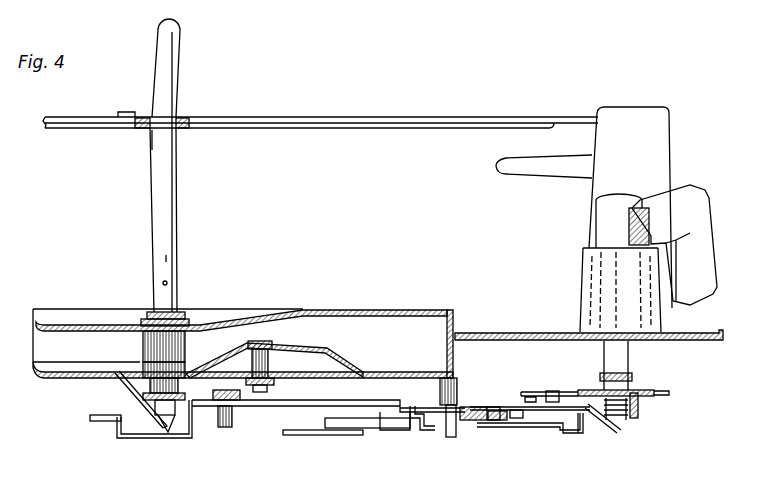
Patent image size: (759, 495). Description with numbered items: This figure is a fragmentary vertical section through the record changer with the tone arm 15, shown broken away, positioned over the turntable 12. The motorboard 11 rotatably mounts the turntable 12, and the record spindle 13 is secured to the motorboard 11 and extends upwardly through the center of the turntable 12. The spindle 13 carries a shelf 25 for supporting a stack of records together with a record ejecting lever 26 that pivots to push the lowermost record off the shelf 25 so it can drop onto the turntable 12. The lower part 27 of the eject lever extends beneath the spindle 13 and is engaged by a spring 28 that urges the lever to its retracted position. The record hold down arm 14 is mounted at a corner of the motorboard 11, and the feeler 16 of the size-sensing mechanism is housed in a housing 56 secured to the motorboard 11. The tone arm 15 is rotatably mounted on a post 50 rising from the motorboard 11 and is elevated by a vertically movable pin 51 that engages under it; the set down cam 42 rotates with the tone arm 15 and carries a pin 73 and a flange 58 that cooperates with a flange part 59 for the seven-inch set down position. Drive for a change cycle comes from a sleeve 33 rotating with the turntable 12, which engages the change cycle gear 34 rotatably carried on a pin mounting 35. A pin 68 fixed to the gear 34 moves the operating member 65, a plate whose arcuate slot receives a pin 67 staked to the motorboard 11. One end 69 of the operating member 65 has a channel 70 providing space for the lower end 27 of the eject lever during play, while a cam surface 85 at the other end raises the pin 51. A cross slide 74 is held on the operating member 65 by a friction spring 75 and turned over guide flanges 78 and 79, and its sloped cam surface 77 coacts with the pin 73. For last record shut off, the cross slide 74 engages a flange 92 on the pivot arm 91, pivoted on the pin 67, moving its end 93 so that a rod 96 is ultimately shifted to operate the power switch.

The motorboard 11 is at (700, 340).
The turntable 12 is at (372, 310).
The spindle 13 is at (170, 211).
The record hold down arm 14 is at (548, 117).
The tone arm 15 is at (692, 240).
The feeler 16 is at (543, 178).
The shelf 25 is at (180, 117).
The record ejecting lever 26 is at (150, 140).
The lower part of the record eject lever 27 is at (192, 442).
The spring 28 is at (147, 415).
The sleeve 33 is at (150, 348).
The change cycle gear 34 is at (318, 367).
The pin mounting 35 is at (273, 357).
The set down cam 42 is at (649, 391).
The post 50 is at (605, 289).
The vertically movable pin 51 is at (620, 425).
The housing 56 is at (654, 143).
The flange 58 is at (553, 391).
The flange part 59 is at (529, 396).
The operating member 65 is at (351, 408).
The pin 67 is at (450, 438).
The pin 68 is at (226, 428).
The end of the operating member 69 is at (100, 423).
The channel 70 is at (138, 440).
The pin 73 is at (639, 414).
The cross slide 74 is at (536, 425).
The friction spring 75 is at (492, 418).
The sloped cam surface 77 is at (589, 425).
The guide flange 78 is at (466, 407).
The guide flange 79 is at (522, 416).
The cam surface 85 is at (617, 434).
The pivot arm 91 is at (381, 431).
The flange 92 is at (420, 431).
The end of the pivot arm 93 is at (325, 421).
The rod 96 is at (295, 436).